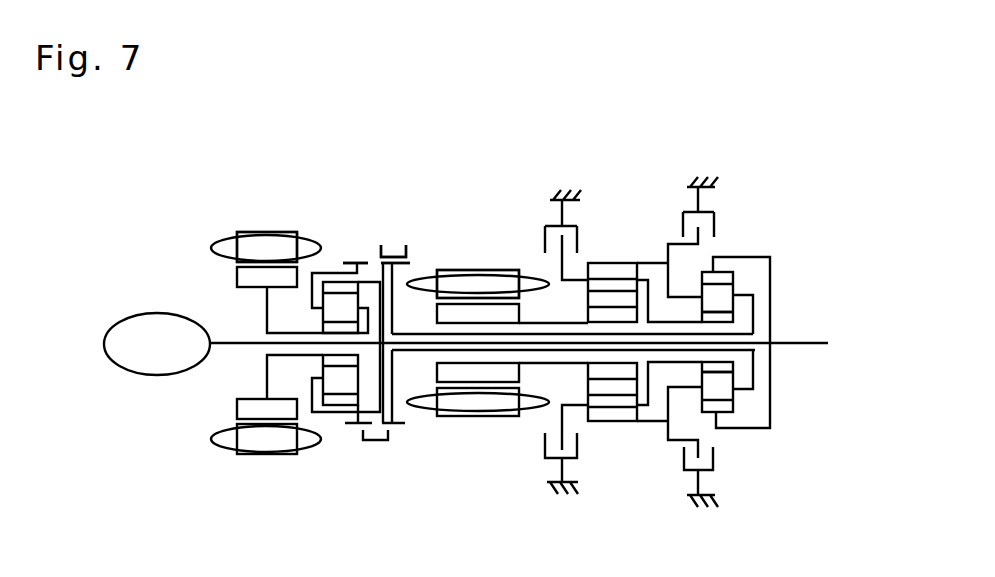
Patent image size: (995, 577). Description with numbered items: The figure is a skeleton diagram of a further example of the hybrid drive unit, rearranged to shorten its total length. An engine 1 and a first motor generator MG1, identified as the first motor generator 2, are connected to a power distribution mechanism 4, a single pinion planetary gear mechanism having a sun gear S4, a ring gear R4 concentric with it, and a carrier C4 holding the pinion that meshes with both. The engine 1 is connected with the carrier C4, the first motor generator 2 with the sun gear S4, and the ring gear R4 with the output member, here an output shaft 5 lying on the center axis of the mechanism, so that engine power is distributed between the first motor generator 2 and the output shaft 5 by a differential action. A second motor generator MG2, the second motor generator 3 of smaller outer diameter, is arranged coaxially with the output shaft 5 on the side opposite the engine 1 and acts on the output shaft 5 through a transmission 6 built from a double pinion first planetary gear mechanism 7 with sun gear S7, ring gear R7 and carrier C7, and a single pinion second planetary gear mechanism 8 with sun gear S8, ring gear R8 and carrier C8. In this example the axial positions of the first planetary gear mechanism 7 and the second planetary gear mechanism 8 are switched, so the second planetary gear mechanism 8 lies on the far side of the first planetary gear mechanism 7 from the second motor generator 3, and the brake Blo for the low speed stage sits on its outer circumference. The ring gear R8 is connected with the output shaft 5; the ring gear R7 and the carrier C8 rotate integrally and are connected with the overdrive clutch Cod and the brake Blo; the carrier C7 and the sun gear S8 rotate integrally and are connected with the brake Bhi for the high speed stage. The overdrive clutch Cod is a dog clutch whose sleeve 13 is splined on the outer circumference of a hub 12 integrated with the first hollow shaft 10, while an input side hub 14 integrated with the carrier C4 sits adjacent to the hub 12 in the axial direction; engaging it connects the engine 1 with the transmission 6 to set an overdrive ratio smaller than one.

The engine 1 is at (170, 313).
The first motor generator 2 is at (237, 233).
The second motor generator 3 is at (468, 417).
The power distribution mechanism 4 is at (283, 400).
The output shaft 5 is at (820, 342).
The transmission 6 is at (767, 355).
The first planetary gear mechanism 7 is at (588, 376).
The second planetary gear mechanism 8 is at (759, 373).
The first hollow shaft 10 is at (396, 382).
The hub 12 is at (412, 260).
The sleeve 13 is at (403, 250).
The input side hub 14 is at (350, 260).
The overdrive clutch Cod is at (366, 226).
The first motor generator MG1 is at (267, 235).
The second motor generator MG2 is at (478, 272).
The ring gear R4 is at (323, 294).
The sun gear S4 is at (323, 362).
The carrier C4 is at (312, 381).
The ring gear R7 is at (612, 263).
The carrier C7 is at (588, 296).
The sun gear S7 is at (588, 380).
The ring gear R8 is at (740, 272).
The carrier C8 is at (753, 295).
The sun gear S8 is at (753, 313).
The brake Bhi is at (566, 329).
The brake Blo is at (693, 329).